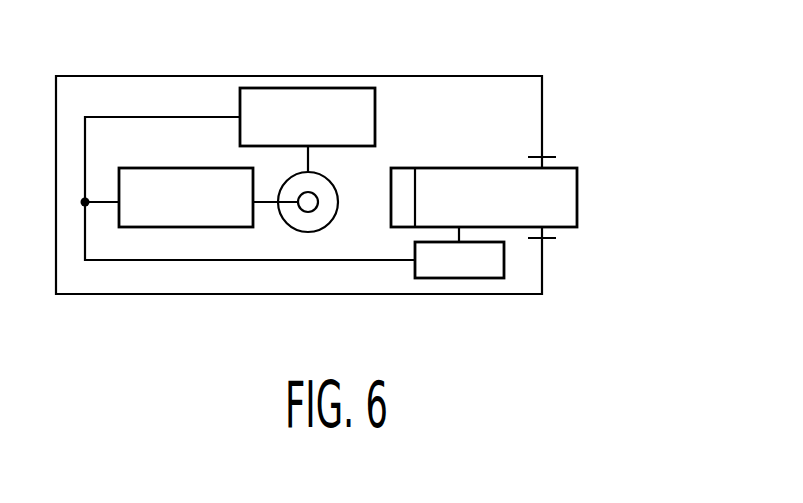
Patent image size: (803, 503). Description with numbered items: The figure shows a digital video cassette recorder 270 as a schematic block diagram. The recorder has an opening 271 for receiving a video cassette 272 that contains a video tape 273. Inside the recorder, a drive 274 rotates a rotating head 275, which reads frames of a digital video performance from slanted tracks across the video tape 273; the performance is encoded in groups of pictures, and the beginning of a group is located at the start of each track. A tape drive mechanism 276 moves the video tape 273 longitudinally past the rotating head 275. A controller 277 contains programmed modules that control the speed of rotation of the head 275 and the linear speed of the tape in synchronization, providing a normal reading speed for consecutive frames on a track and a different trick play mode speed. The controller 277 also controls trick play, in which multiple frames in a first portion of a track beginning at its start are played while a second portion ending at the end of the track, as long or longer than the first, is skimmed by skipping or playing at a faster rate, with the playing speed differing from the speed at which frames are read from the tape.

The digital video cassette recorder 270 is at (643, 61).
The opening 271 is at (572, 158).
The video cassette 272 is at (560, 198).
The video tape 273 is at (405, 172).
The drive 274 is at (297, 226).
The rotating head 275 is at (205, 214).
The tape drive mechanism 276 is at (458, 270).
The controller 277 is at (327, 130).